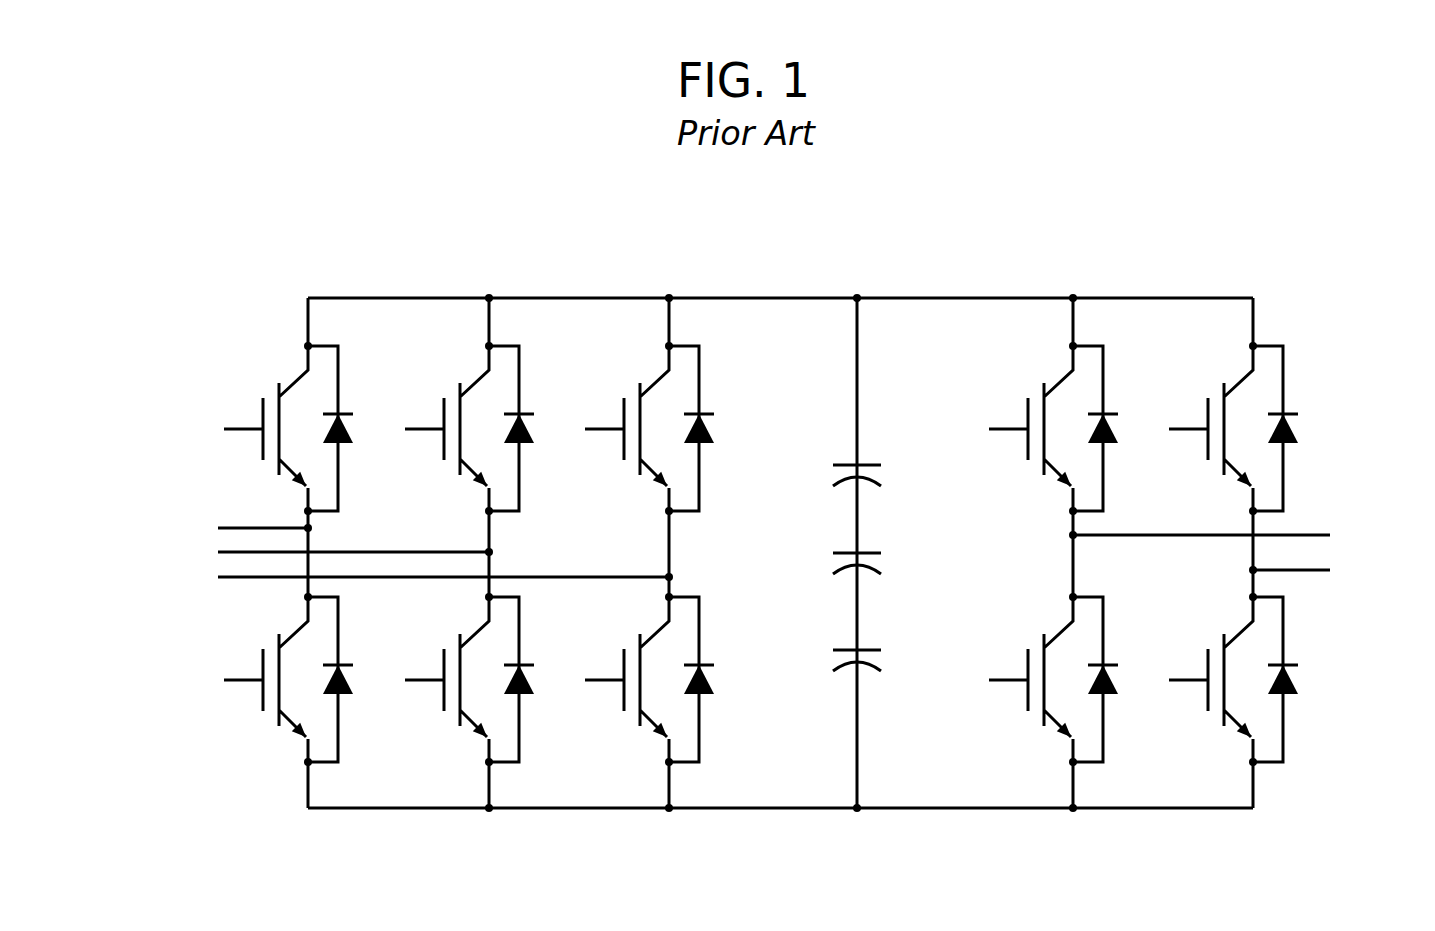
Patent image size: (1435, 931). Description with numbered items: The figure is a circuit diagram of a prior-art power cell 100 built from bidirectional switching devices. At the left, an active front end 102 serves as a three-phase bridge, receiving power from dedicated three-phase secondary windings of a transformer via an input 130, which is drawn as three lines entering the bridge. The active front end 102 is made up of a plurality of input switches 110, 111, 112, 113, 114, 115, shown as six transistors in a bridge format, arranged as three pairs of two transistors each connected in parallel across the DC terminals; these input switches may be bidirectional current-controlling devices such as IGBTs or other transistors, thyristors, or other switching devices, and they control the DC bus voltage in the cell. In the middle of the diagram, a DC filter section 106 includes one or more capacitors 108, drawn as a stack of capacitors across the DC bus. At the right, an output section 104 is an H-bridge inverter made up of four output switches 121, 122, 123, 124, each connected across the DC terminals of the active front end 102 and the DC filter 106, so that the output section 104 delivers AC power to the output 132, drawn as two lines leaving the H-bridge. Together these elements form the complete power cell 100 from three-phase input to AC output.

The power cell 100 is at (174, 170).
The active front end 102 is at (455, 509).
The output section 104 is at (1131, 509).
The DC filter section 106 is at (861, 509).
The capacitors 108 is at (883, 478).
The input switch 110 is at (270, 735).
The input switch 111 is at (457, 735).
The input switch 112 is at (625, 735).
The input switch 113 is at (268, 382).
The input switch 114 is at (450, 382).
The input switch 115 is at (630, 382).
The output switch 121 is at (1034, 382).
The output switch 122 is at (1215, 382).
The output switch 123 is at (1050, 735).
The output switch 124 is at (1218, 735).
The input 130 is at (205, 520).
The output 132 is at (1344, 526).